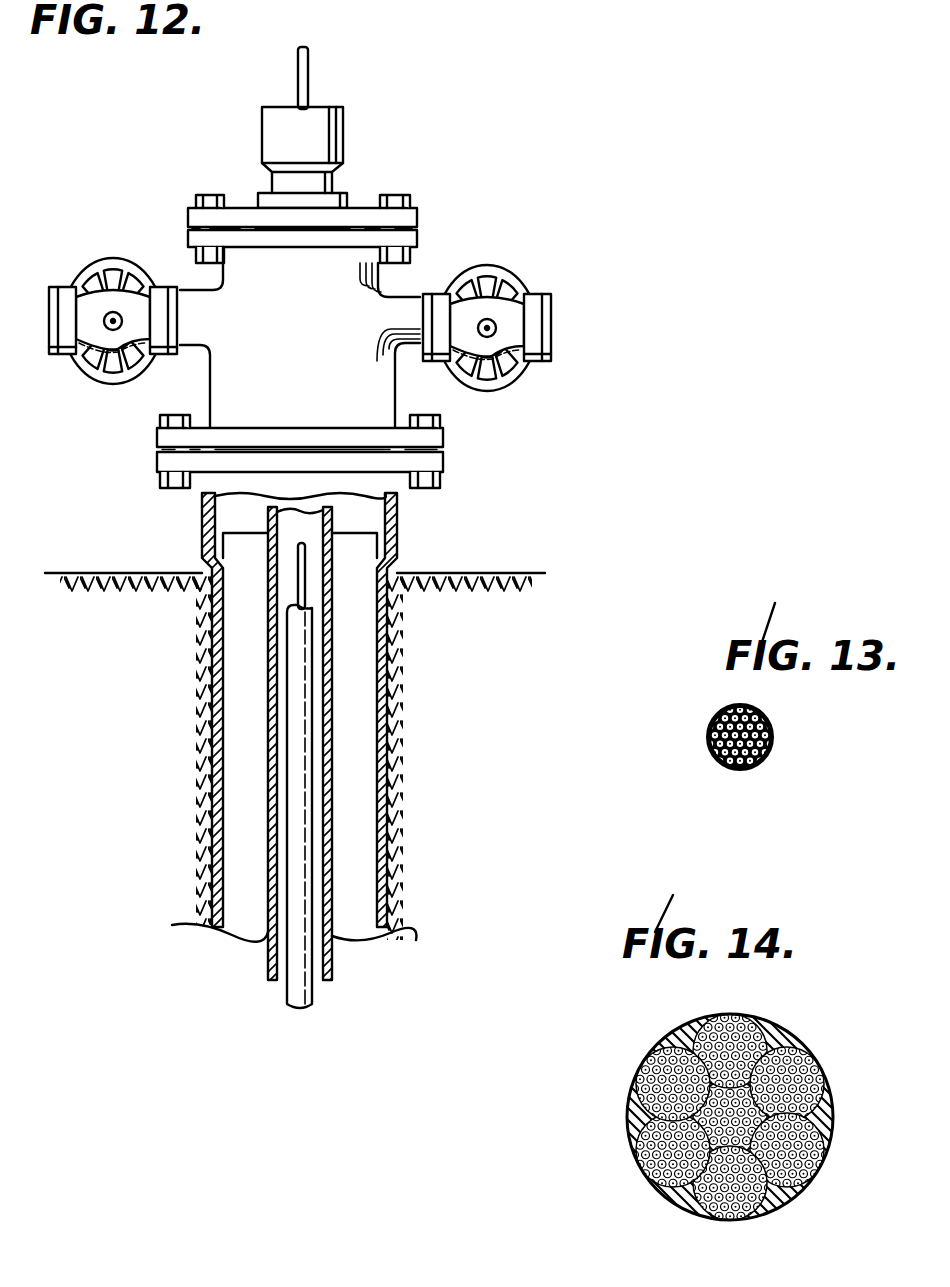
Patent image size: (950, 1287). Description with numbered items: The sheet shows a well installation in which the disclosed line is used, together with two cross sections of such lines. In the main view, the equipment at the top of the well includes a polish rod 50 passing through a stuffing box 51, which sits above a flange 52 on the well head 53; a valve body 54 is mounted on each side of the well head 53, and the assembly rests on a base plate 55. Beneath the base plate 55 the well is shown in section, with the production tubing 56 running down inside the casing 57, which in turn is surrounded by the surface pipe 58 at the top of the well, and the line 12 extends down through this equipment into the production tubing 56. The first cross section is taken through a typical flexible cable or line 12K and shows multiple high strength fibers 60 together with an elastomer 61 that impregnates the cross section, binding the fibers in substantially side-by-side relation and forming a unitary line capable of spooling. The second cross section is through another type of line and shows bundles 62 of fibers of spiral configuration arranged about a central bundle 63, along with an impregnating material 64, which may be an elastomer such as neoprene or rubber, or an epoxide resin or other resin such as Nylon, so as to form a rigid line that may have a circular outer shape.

In FIG. 12, the line 12 is at (297, 583).
In FIG. 13, the flexible cable or line 12K is at (752, 746).
In FIG. 12, the polish rod 50 is at (308, 61).
In FIG. 12, the stuffing box 51 is at (273, 119).
In FIG. 12, the flange 52 is at (357, 210).
In FIG. 12, the well head 53 is at (300, 337).
In FIG. 12, the valve body 54 is at (506, 283).
In FIG. 12, the base plate 55 is at (163, 456).
In FIG. 12, the production tubing 56 is at (300, 651).
In FIG. 12, the casing 57 is at (333, 756).
In FIG. 12, the surface pipe 58 is at (215, 847).
In FIG. 13, the high strength fibers 60 is at (708, 733).
In FIG. 13, the elastomer 61 is at (716, 760).
In FIG. 14, the bundles of fibers 62 is at (725, 1138).
In FIG. 14, the central bundle 63 is at (640, 1156).
In FIG. 14, the impregnating material 64 is at (770, 1200).